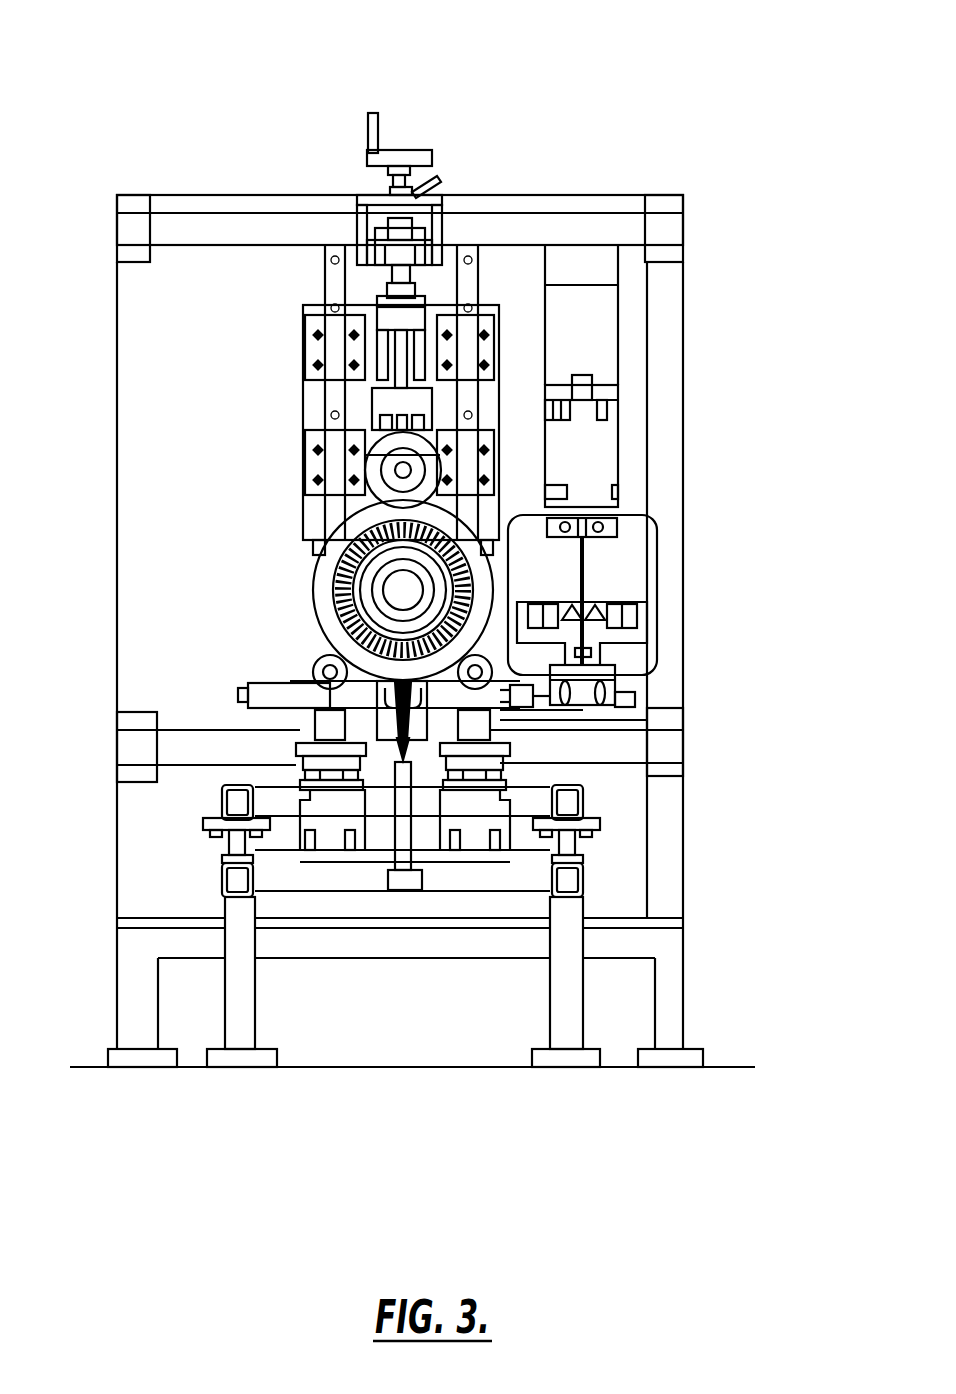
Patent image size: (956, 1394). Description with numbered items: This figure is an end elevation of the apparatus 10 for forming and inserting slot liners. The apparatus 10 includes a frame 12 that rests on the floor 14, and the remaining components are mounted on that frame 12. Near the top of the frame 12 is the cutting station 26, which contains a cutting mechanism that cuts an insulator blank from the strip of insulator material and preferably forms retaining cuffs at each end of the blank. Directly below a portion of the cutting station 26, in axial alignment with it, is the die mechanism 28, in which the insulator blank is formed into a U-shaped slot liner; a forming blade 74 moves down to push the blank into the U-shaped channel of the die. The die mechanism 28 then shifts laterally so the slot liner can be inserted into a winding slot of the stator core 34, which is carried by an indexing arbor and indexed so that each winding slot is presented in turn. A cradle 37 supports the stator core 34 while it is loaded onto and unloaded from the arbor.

The apparatus 10 is at (676, 112).
The frame 12 is at (685, 745).
The floor 14 is at (735, 1055).
The cutting station 26 is at (674, 600).
The die mechanism 28 is at (637, 657).
The stator core 34 is at (315, 577).
The cradle 37 is at (236, 676).
The forming blade 74 is at (585, 550).